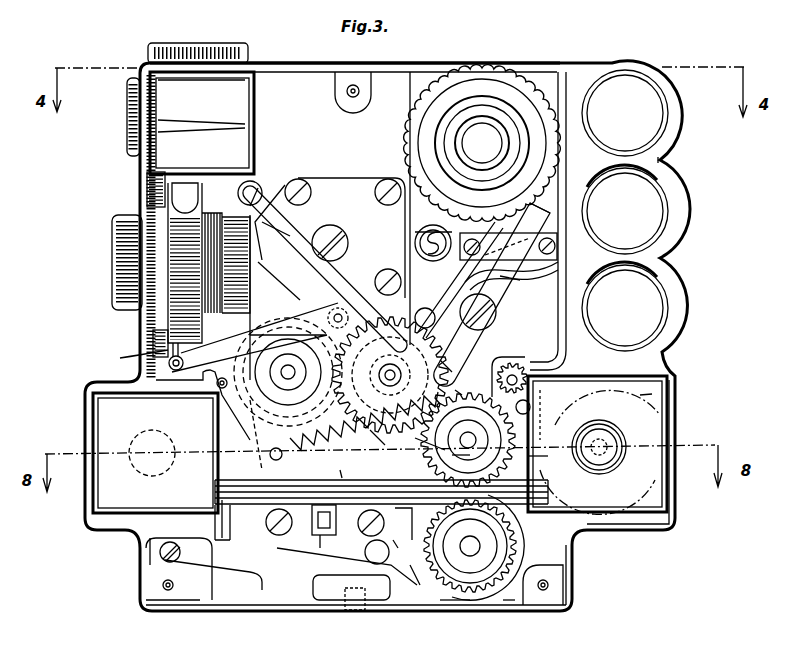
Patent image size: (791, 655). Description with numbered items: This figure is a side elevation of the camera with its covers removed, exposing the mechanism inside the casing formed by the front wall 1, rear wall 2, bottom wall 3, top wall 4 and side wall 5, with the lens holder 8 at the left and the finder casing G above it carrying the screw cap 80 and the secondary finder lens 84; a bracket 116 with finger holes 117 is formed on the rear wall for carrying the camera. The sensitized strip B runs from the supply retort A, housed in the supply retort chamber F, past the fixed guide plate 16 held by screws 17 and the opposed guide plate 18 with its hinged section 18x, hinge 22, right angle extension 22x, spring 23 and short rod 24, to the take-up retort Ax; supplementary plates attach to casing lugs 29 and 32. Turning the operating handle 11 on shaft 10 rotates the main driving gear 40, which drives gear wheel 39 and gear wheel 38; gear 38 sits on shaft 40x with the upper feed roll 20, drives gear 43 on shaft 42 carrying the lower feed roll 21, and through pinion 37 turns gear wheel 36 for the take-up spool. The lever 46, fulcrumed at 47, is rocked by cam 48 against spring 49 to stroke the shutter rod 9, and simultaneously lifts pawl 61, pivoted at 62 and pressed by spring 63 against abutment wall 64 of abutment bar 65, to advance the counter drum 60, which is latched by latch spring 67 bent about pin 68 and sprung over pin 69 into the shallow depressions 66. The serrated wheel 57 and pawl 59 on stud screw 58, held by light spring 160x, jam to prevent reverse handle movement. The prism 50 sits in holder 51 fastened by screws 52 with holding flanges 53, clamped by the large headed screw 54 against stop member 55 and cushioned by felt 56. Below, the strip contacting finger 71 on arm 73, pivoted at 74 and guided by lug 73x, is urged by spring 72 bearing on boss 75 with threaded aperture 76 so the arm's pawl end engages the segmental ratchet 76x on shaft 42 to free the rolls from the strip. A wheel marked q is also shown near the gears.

The front wall 1 is at (140, 183).
The rear wall 2 is at (578, 205).
The bottom wall 3 is at (448, 612).
The top wall 4 is at (455, 63).
The side wall 5 is at (200, 626).
The lens holder 8 is at (113, 259).
The shutter rod 9 is at (138, 358).
The shaft 10 is at (211, 264).
The operating handle 11 is at (243, 440).
The fixed guide plate 16 is at (402, 508).
The screws 17 is at (282, 527).
The guide plate 18 is at (410, 478).
The hinged section 18x is at (356, 465).
The upper feed roll 20 is at (549, 460).
The lower feed roll 21 is at (522, 552).
The hinge 22 is at (330, 458).
The right angle extension 22x is at (285, 460).
The spring 23 is at (322, 539).
The short rod 24 is at (347, 562).
The casing lugs 29 is at (555, 596).
The casing lugs 32 is at (226, 393).
The gear wheel 36 is at (625, 378).
The pinion 37 is at (507, 382).
The gear wheel 38 is at (419, 437).
The gear wheel 39 is at (456, 426).
The main driving gear 40 is at (288, 382).
The shaft 40x is at (466, 458).
The shaft 42 is at (470, 546).
The gear 43 is at (410, 575).
The lever 46 is at (213, 348).
The fulcrum 47 is at (330, 313).
The cam 48 is at (390, 375).
The spring 49 is at (378, 434).
The prism 50 is at (279, 281).
The holder 51 is at (330, 252).
The screws 52 is at (388, 278).
The holding flanges 53 is at (243, 193).
The large headed screw 54 is at (329, 232).
The stop member 55 is at (290, 258).
The strip of felt 56 is at (258, 188).
The wheel 57 is at (460, 359).
The stud screw 58 is at (490, 352).
The pawl 59 is at (466, 330).
The drum-like member 60 is at (533, 138).
The pawl 61 is at (472, 266).
The pivot 62 is at (427, 313).
The spring 63 is at (572, 226).
The abutment wall 64 is at (557, 258).
The abutment bar 65 is at (529, 280).
The shallow depressions 66 is at (507, 85).
The latch spring 67 is at (458, 215).
The pin 68 is at (415, 232).
The pin 69 is at (430, 232).
The strip contacting finger 71 is at (225, 531).
The spring 72 is at (250, 572).
The finger holding arm 73 is at (304, 552).
The projecting lug 73x is at (404, 548).
The pivot 74 is at (160, 553).
The boss 75 is at (318, 595).
The threaded aperture 76 is at (372, 597).
The segmental ratchet 76x is at (503, 600).
The screw cap 80 is at (128, 122).
The secondary finder lens 84 is at (196, 48).
The bracket 116 is at (665, 160).
The finger holes 117 is at (661, 213).
The light spring 160x is at (532, 285).
The retort A is at (155, 453).
The take-up retort Ax is at (652, 394).
The sensitized strip B is at (520, 497).
The supply retort chamber F is at (90, 417).
The finder casing G is at (202, 123).
The gear q is at (462, 386).